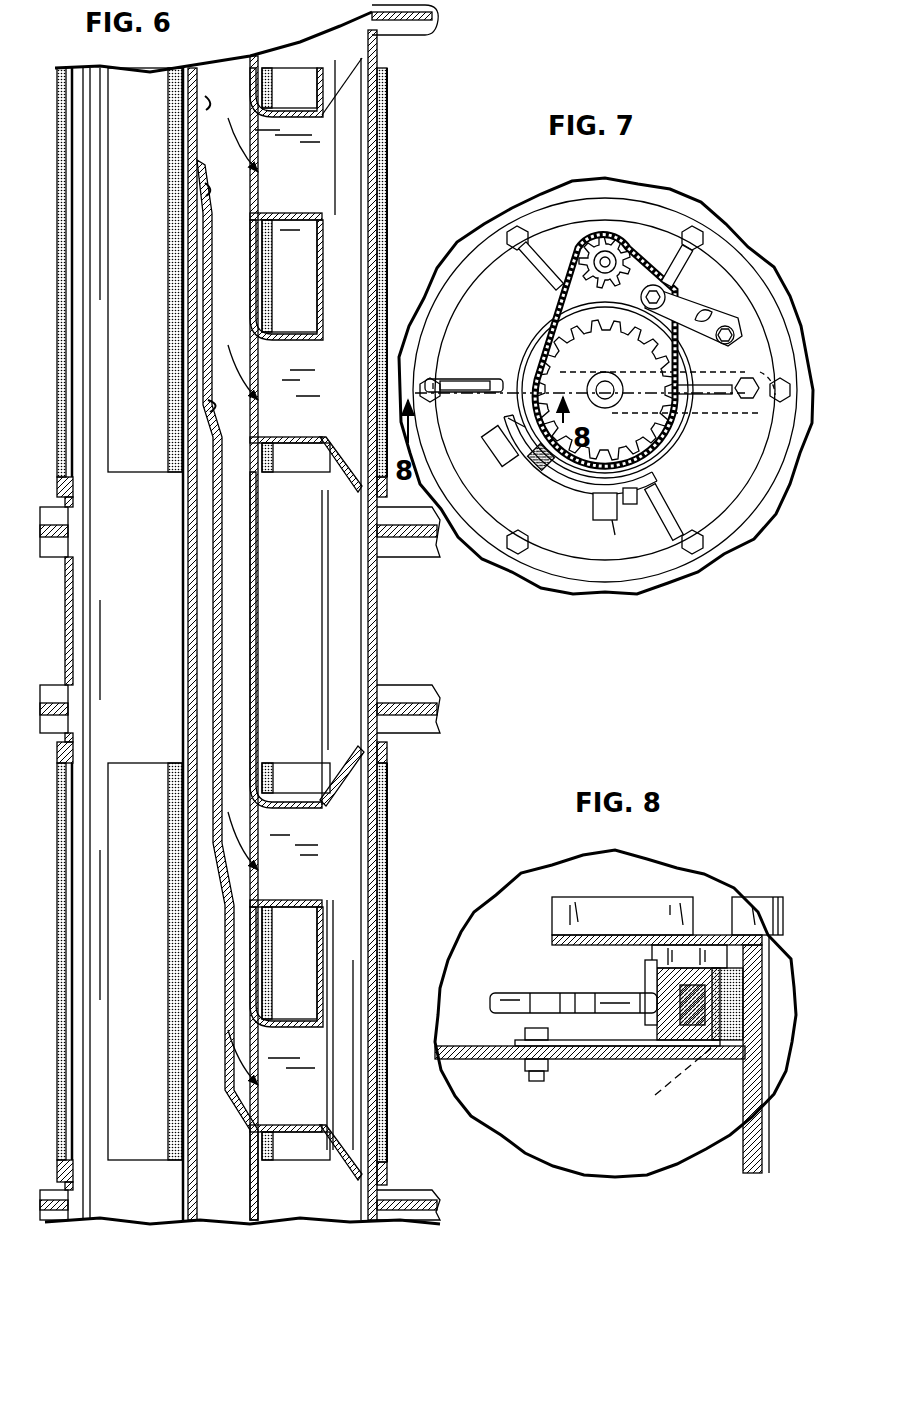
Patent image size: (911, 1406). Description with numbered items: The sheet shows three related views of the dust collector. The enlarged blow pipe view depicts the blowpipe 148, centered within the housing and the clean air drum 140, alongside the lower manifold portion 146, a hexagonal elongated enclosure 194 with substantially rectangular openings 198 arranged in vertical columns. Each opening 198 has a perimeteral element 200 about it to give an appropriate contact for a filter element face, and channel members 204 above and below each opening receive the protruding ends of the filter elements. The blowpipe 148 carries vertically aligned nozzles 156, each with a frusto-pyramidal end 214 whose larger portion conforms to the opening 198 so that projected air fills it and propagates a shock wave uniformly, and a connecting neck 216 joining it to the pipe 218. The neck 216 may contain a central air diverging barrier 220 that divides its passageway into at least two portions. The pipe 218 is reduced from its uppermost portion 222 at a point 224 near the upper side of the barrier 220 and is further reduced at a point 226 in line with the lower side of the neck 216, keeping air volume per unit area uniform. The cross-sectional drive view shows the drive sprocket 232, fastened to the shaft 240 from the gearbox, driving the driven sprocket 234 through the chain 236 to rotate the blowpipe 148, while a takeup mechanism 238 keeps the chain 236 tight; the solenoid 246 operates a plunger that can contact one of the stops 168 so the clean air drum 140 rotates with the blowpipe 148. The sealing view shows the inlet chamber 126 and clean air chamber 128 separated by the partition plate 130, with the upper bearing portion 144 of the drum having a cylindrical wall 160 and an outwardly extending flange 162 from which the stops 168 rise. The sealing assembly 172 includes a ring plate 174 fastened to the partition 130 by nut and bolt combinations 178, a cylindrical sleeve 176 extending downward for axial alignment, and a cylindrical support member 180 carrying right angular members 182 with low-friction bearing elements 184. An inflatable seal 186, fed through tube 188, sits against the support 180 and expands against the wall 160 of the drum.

In FIG. 8, the inlet chamber 126 is at (505, 1113).
In FIG. 8, the clean air chamber 128 is at (480, 940).
In FIG. 7, the partition plate 130 is at (583, 590).
In FIG. 8, the partition plate 130 is at (490, 1060).
In FIG. 6, the clean air drum 140 is at (417, 157).
In FIG. 7, the clean air drum 140 is at (548, 552).
In FIG. 8, the clean air drum 140 is at (710, 888).
In FIG. 7, the upper bearing portion 144 is at (538, 508).
In FIG. 8, the upper bearing portion 144 is at (742, 1133).
In FIG. 6, the lower manifold portion 146 is at (380, 632).
In FIG. 6, the blowpipe 148 is at (188, 598).
In FIG. 7, the blowpipe 148 is at (605, 378).
In FIG. 6, the nozzle 156 is at (367, 237).
In FIG. 7, the cylindrical wall 160 is at (620, 480).
In FIG. 8, the cylindrical wall 160 is at (755, 1095).
In FIG. 7, the outwardly extending flange 162 is at (730, 513).
In FIG. 8, the outwardly extending flange 162 is at (552, 940).
In FIG. 7, the stop 168 is at (685, 255).
In FIG. 8, the stop 168 is at (603, 910).
In FIG. 7, the sealing assembly 172 is at (582, 515).
In FIG. 8, the sealing assembly 172 is at (645, 975).
In FIG. 7, the ring plate 174 is at (647, 570).
In FIG. 8, the ring plate 174 is at (587, 1047).
In FIG. 7, the cylindrical sleeve 176 is at (533, 497).
In FIG. 8, the cylindrical sleeve 176 is at (742, 1158).
In FIG. 7, the nut and bolt combination 178 is at (515, 228).
In FIG. 8, the nut and bolt combination 178 is at (537, 1082).
In FIG. 7, the cylindrical support member 180 is at (593, 500).
In FIG. 8, the cylindrical support member 180 is at (657, 1025).
In FIG. 7, the right angular member 182 is at (495, 460).
In FIG. 8, the right angular member 182 is at (648, 972).
In FIG. 7, the bearing element 184 is at (510, 413).
In FIG. 8, the bearing element 184 is at (690, 950).
In FIG. 7, the inflatable seal 186 is at (677, 532).
In FIG. 8, the inflatable seal 186 is at (662, 1090).
In FIG. 7, the tube 188 is at (432, 379).
In FIG. 8, the tube 188 is at (493, 1013).
In FIG. 6, the enclosure 194 is at (378, 662).
In FIG. 6, the opening 198 is at (380, 137).
In FIG. 6, the perimeteral element 200 is at (387, 60).
In FIG. 6, the channel member 204 is at (432, 15).
In FIG. 6, the frusto-pyramidal end 214 is at (350, 268).
In FIG. 6, the connecting neck 216 is at (297, 110).
In FIG. 6, the pipe 218 is at (258, 643).
In FIG. 6, the air diverging barrier 220 is at (290, 213).
In FIG. 6, the uppermost portion 222 is at (205, 100).
In FIG. 6, the reduction point 224 is at (205, 187).
In FIG. 6, the reduction point 226 is at (207, 405).
In FIG. 7, the drive sprocket 232 is at (560, 290).
In FIG. 7, the driven sprocket 234 is at (640, 423).
In FIG. 7, the chain 236 is at (640, 250).
In FIG. 7, the takeup mechanism 238 is at (735, 292).
In FIG. 7, the shaft 240 is at (605, 250).
In FIG. 7, the solenoid 246 is at (755, 393).